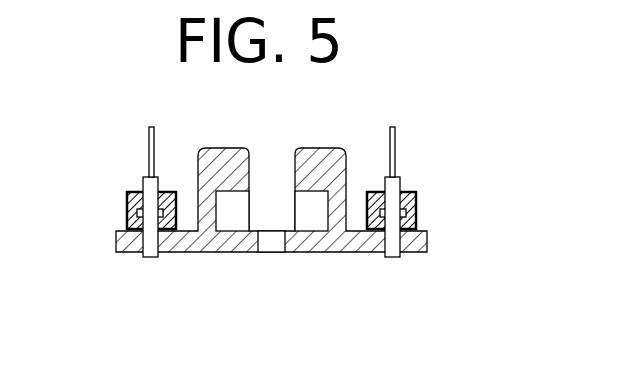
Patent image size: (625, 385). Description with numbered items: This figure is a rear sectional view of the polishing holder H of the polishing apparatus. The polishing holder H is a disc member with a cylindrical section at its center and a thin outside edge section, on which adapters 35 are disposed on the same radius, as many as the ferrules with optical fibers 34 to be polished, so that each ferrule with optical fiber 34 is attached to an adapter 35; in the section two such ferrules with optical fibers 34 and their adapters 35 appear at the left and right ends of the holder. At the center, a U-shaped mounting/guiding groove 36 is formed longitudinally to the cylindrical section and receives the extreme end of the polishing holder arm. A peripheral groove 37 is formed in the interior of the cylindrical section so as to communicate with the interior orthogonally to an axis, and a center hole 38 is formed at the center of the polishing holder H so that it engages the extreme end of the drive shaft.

The ferrule with optical fiber 34 is at (145, 185).
The adapter 35 is at (127, 208).
The mounting/guiding groove 36 is at (250, 168).
The peripheral groove 37 is at (228, 213).
The center hole 38 is at (268, 238).
The polishing holder H is at (538, 201).